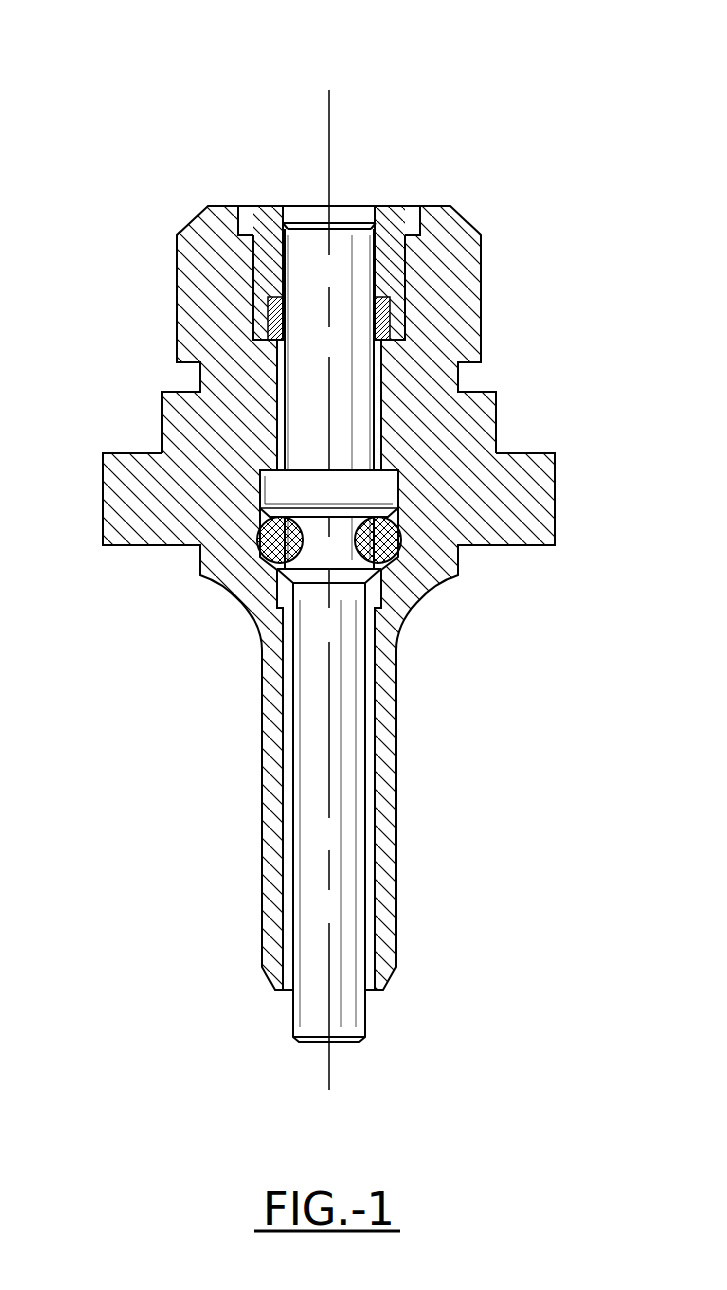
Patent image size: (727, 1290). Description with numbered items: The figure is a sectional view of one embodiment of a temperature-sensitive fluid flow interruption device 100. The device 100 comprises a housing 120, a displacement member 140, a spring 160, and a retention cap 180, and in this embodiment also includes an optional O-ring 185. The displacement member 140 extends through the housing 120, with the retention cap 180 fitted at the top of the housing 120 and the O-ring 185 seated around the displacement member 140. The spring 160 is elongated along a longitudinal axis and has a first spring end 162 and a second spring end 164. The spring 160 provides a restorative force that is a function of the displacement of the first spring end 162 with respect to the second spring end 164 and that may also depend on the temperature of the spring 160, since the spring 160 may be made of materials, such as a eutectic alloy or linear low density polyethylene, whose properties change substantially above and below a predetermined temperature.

The temperature-sensitive fluid flow interruption device 100 is at (470, 157).
The housing 120 is at (527, 545).
The displacement member 140 is at (326, 798).
The spring 160 is at (273, 402).
The first spring end 162 is at (393, 320).
The second spring end 164 is at (400, 463).
The retention cap 180 is at (258, 206).
The O-ring 185 is at (283, 565).